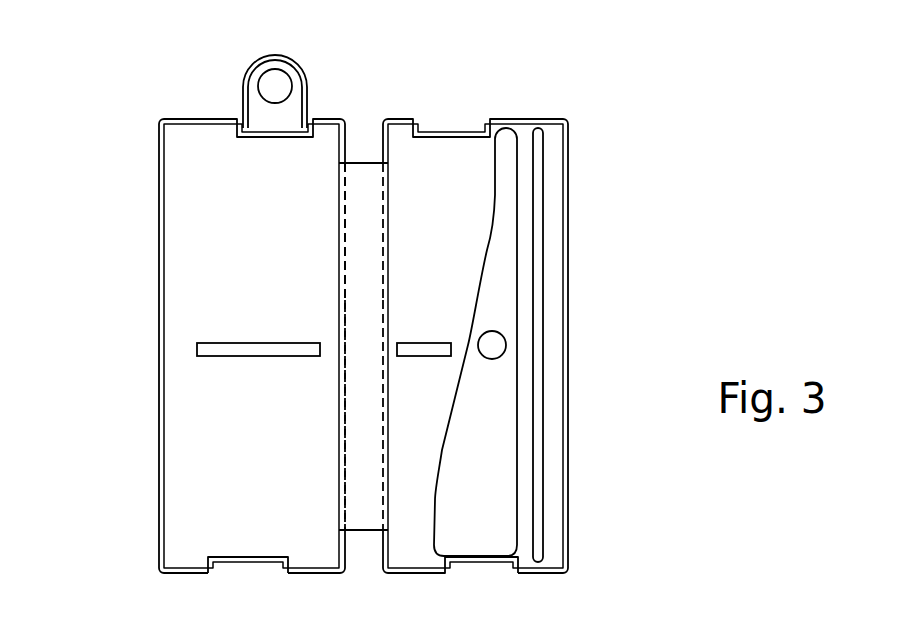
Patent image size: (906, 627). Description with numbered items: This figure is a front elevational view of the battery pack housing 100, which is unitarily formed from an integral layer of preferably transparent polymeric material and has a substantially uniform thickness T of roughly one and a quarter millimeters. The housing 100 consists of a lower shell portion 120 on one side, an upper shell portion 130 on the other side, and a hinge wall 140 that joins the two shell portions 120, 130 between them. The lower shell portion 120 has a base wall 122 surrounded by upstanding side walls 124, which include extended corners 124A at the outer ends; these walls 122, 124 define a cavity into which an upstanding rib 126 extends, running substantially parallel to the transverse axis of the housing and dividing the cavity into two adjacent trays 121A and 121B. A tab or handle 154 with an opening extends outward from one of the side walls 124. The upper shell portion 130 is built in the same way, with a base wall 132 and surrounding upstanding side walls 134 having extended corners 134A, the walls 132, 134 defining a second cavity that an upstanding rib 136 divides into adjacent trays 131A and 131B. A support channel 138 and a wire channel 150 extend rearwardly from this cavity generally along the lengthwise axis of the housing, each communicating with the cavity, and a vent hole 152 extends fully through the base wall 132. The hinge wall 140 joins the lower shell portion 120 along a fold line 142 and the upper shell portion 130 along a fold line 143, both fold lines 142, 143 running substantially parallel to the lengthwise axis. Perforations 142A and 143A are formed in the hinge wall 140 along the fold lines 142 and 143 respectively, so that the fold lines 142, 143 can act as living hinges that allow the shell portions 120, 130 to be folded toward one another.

The battery pack housing 100 is at (540, 66).
The lower shell portion 120 is at (213, 316).
The tray 121A is at (217, 498).
The tray 121B is at (227, 293).
The base wall 122 is at (197, 150).
The side walls 124 is at (158, 365).
The extended corners 124A is at (195, 575).
The upstanding rib 126 is at (272, 358).
The upper shell portion 130 is at (532, 322).
The tray 131A is at (400, 396).
The tray 131B is at (409, 263).
The base wall 132 is at (455, 158).
The side walls 134 is at (567, 343).
The extended corners 134A is at (530, 118).
The upstanding rib 136 is at (422, 340).
The support channel 138 is at (538, 240).
The hinge wall 140 is at (356, 296).
The fold line 142 is at (338, 188).
The perforations 142A is at (345, 448).
The fold line 143 is at (390, 190).
The perforations 143A is at (382, 480).
The wire channel 150 is at (497, 430).
The vent hole 152 is at (500, 334).
The tab or handle 154 is at (287, 60).
The thickness T is at (237, 243).